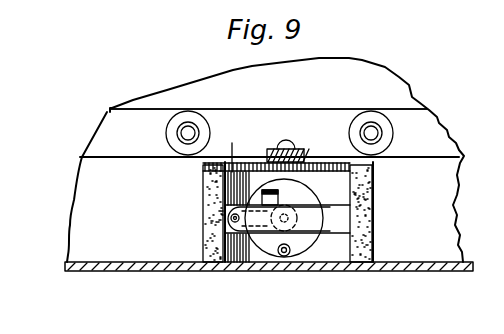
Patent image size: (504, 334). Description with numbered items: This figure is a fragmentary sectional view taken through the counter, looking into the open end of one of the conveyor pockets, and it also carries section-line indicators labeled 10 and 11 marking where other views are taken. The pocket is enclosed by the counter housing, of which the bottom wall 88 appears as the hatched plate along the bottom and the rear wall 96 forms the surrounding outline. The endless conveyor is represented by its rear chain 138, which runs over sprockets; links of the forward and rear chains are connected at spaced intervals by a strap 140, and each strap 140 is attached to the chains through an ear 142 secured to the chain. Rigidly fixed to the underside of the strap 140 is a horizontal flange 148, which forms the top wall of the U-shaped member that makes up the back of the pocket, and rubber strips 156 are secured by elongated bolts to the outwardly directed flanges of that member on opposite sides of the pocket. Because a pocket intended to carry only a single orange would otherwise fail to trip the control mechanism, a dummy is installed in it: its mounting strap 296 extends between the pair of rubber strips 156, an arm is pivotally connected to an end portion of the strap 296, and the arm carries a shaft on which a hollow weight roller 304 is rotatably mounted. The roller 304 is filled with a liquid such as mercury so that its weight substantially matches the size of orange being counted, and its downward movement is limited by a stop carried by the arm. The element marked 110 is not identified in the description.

The section line 10 is at (188, 143).
The section line 11- 11 is at (255, 83).
The bottom wall 88 is at (452, 269).
The rear wall 96 is at (90, 214).
The drive shaft 110 is at (236, 165).
The rear chain 138 is at (106, 137).
The strap 140 is at (263, 153).
The ear 142 is at (310, 139).
The horizontal flange 148 is at (337, 171).
The rubber strip 156 is at (205, 222).
The mounting strap 296 is at (340, 221).
The hollow weight roller 304 is at (302, 247).